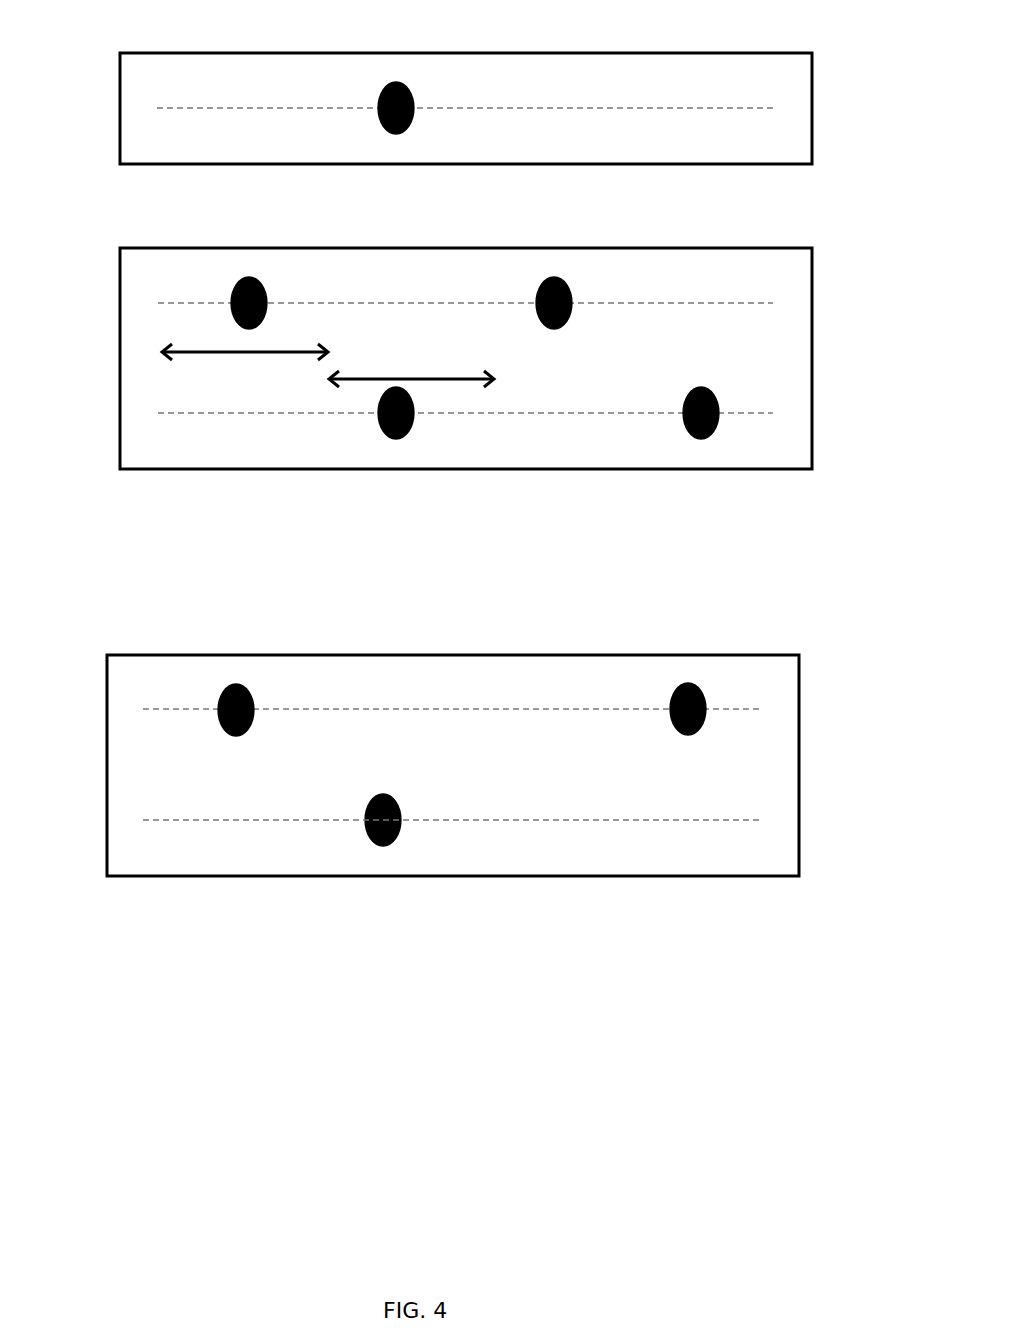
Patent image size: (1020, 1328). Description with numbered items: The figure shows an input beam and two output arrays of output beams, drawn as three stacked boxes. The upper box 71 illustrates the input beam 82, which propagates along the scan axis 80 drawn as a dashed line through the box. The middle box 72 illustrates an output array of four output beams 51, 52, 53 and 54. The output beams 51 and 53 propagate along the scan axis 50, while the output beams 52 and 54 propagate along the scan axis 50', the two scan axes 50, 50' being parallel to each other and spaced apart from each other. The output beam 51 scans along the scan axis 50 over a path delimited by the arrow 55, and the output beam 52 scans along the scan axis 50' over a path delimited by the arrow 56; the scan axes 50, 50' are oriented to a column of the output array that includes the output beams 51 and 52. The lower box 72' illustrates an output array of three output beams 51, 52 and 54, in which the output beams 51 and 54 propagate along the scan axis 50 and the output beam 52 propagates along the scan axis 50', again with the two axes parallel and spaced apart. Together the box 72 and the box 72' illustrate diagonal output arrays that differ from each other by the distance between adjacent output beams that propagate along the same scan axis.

The box 71 is at (851, 116).
The box 72 is at (507, 334).
The box 72' is at (494, 765).
The scan axis 80 is at (177, 107).
The input beam 82 is at (396, 82).
The scan axis 50 is at (401, 480).
The scan axis 50' is at (411, 387).
The output beam 51 is at (256, 278).
The output beam 52 is at (398, 438).
The output beam 53 is at (556, 277).
The output beam 54 is at (705, 438).
The arrow 55 is at (188, 355).
The arrow 56 is at (466, 376).